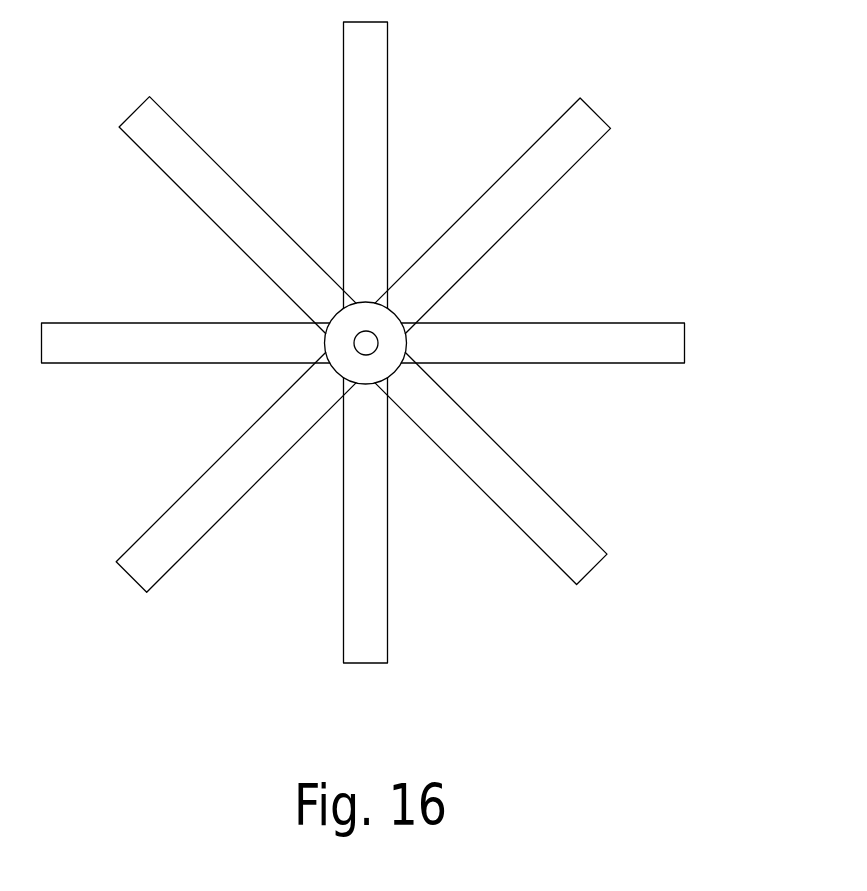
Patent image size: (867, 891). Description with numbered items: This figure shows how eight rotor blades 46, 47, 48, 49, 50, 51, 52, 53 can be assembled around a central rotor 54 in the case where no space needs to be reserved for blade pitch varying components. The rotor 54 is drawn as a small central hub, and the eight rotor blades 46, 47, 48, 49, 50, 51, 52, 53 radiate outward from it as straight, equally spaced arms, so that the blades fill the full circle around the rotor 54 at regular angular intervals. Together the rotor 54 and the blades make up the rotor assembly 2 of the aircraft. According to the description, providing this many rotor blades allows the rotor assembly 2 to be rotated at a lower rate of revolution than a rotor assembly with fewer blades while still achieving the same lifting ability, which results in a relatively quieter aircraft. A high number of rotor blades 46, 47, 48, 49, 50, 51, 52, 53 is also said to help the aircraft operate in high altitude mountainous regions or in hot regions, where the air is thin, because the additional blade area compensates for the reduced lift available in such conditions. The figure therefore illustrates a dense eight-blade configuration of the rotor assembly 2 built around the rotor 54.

The rotor assembly 2 is at (363, 393).
The rotor blade 46 is at (376, 88).
The rotor blade 47 is at (163, 122).
The rotor blade 48 is at (93, 340).
The rotor blade 49 is at (215, 482).
The rotor blade 50 is at (357, 548).
The rotor blade 51 is at (533, 498).
The rotor blade 52 is at (572, 335).
The rotor blade 53 is at (543, 177).
The rotor 54 is at (393, 355).